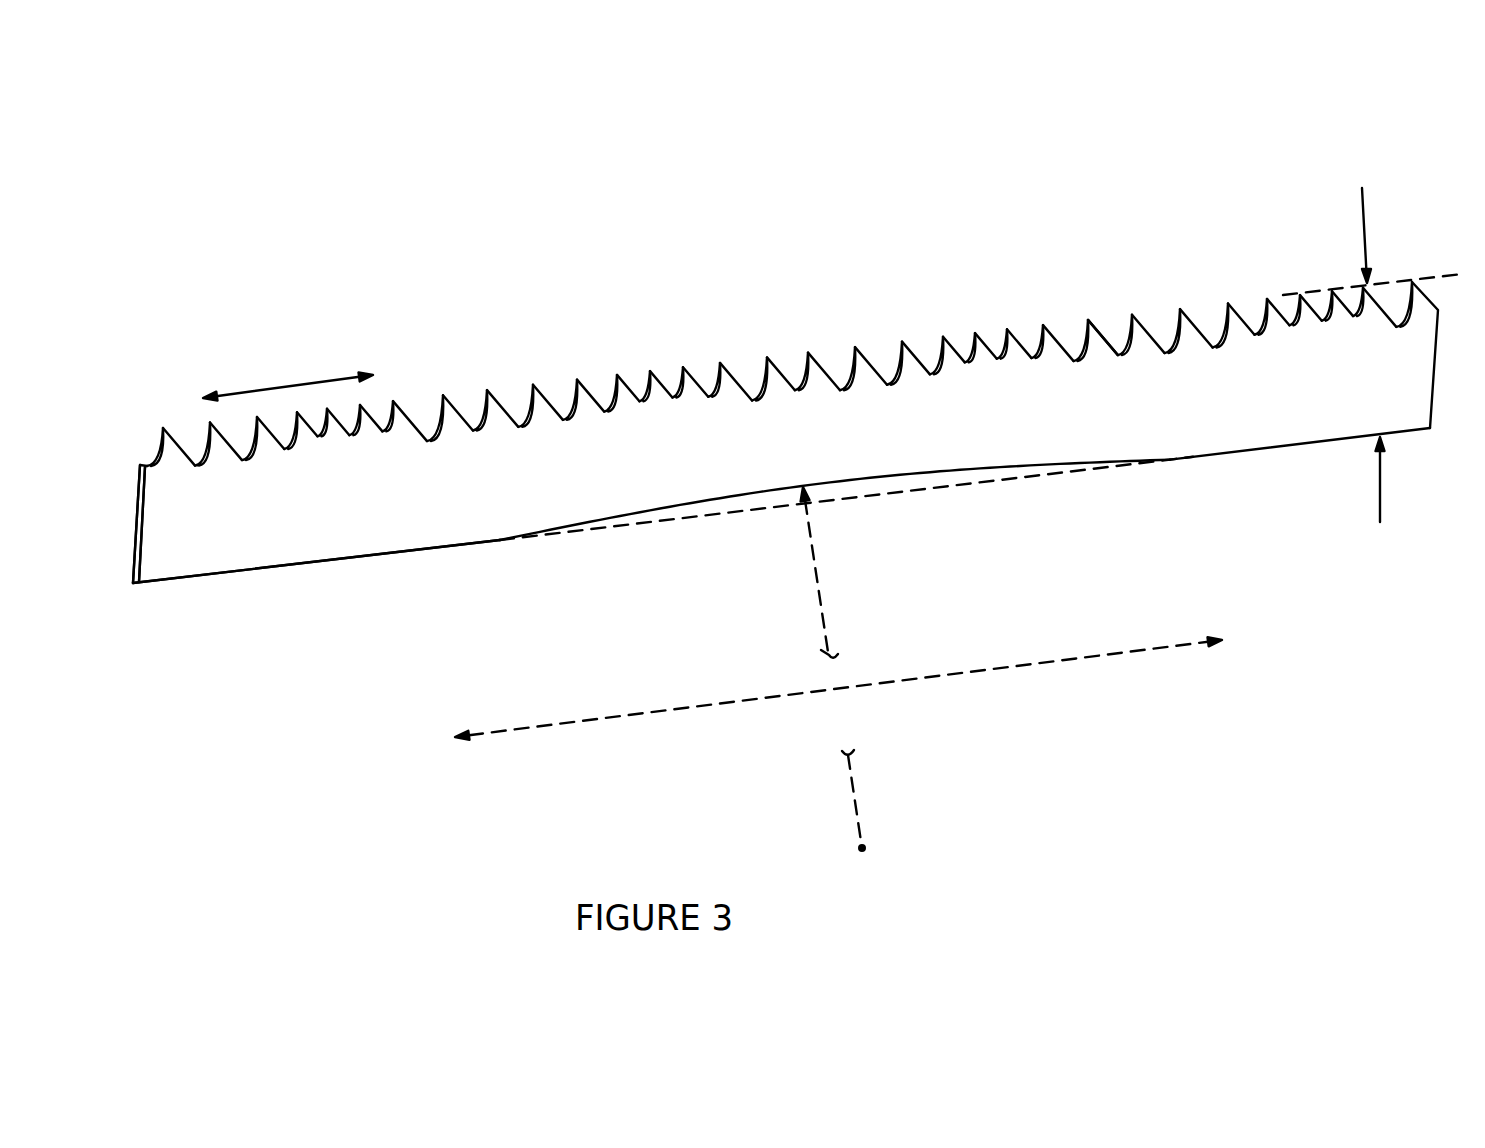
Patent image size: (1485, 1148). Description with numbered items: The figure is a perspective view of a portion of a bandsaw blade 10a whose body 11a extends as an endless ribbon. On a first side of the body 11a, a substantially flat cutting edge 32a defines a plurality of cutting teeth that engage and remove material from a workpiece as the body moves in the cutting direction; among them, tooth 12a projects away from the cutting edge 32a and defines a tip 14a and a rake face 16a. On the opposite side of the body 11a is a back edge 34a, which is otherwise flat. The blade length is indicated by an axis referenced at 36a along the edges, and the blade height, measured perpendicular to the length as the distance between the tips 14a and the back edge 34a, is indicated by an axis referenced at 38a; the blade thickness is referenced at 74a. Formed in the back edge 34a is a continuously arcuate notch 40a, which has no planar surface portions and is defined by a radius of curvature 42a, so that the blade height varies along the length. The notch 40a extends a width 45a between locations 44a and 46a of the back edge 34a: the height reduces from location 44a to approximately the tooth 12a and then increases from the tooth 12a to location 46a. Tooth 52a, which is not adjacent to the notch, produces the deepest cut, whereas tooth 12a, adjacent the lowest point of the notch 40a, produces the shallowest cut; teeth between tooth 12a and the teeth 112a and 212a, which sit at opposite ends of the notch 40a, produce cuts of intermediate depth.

The blade 10a is at (428, 184).
The body 11a is at (1200, 398).
The tooth 12a is at (782, 370).
The tip 14a is at (769, 363).
The rake face 16a is at (762, 372).
The cutting edge 32a is at (1112, 278).
The back edge 34a is at (272, 612).
The length axis 36a is at (258, 390).
The height axis 38a is at (1366, 216).
The continuously arcuate notch 40a is at (877, 510).
The radius of curvature 42a is at (855, 803).
The location 44a is at (502, 543).
The width 45a is at (1170, 652).
The location 46a is at (1193, 458).
The tooth 52a is at (172, 432).
The thickness 74a is at (100, 487).
The tooth 112a is at (451, 392).
The tooth 212a is at (1183, 310).